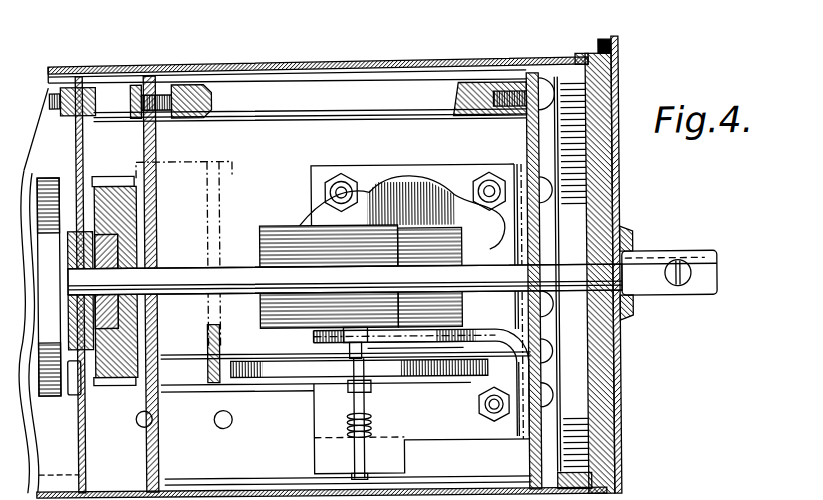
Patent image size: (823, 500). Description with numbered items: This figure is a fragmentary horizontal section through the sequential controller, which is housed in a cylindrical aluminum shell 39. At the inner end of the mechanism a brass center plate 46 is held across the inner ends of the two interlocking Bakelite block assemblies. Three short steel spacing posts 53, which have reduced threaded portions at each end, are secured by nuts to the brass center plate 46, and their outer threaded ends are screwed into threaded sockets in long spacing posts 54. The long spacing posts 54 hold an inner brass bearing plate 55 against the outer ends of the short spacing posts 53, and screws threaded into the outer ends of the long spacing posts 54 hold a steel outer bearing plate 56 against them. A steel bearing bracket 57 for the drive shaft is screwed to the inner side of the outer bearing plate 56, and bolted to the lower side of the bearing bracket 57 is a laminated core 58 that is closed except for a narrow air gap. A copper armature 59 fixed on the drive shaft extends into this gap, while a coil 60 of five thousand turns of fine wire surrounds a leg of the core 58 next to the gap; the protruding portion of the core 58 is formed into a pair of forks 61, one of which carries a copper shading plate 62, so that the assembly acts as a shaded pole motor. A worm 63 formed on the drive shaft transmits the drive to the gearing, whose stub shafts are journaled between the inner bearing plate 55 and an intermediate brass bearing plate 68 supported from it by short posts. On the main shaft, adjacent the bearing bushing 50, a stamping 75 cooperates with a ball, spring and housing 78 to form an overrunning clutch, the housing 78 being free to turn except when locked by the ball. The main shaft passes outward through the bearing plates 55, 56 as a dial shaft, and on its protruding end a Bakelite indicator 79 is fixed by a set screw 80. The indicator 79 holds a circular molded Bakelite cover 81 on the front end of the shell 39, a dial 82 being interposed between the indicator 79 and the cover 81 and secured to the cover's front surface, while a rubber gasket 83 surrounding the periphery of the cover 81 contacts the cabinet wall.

The cylindrical aluminum shell 39 is at (274, 64).
The brass center plate 46 is at (84, 176).
The bearing bushing 50 is at (52, 380).
The short steel spacing posts 53 is at (112, 94).
The long spacing posts 54 is at (335, 95).
The inner brass bearing plate 55 is at (157, 472).
The outer bearing plate 56 is at (540, 466).
The steel bearing bracket 57 is at (492, 325).
The laminated core 58 is at (411, 176).
The copper armature 59 is at (280, 378).
The coil 60 is at (280, 232).
The forks 61 is at (310, 372).
The copper shading plate 62 is at (499, 386).
The worm 63 is at (372, 428).
The intermediate brass bearing plate 68 is at (207, 340).
The stamping 75 is at (120, 255).
The housing 78 is at (130, 226).
The Bakelite indicator 79 is at (660, 298).
The set screw 80 is at (690, 298).
The circular molded Bakelite cover 81 is at (600, 80).
The dial 82 is at (620, 166).
The rubber gasket 83 is at (618, 46).